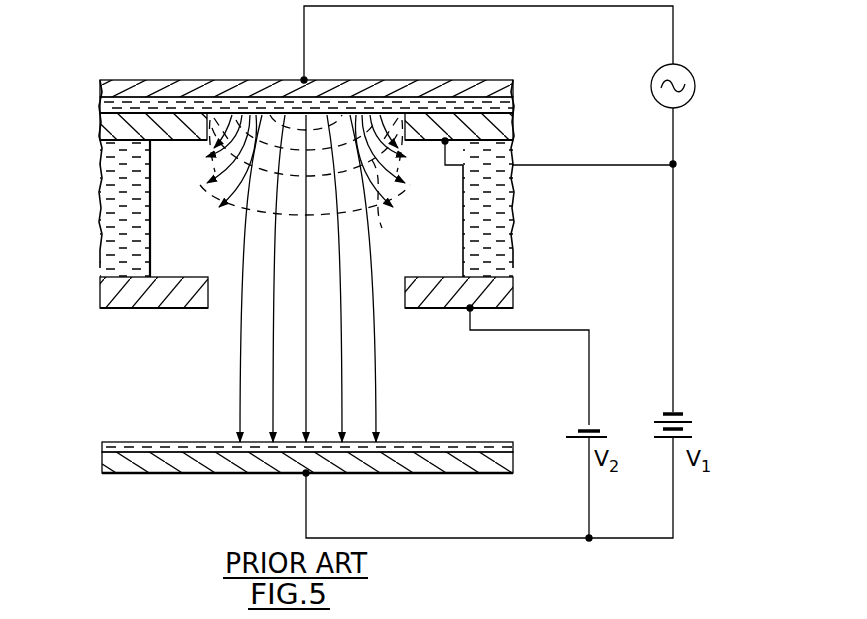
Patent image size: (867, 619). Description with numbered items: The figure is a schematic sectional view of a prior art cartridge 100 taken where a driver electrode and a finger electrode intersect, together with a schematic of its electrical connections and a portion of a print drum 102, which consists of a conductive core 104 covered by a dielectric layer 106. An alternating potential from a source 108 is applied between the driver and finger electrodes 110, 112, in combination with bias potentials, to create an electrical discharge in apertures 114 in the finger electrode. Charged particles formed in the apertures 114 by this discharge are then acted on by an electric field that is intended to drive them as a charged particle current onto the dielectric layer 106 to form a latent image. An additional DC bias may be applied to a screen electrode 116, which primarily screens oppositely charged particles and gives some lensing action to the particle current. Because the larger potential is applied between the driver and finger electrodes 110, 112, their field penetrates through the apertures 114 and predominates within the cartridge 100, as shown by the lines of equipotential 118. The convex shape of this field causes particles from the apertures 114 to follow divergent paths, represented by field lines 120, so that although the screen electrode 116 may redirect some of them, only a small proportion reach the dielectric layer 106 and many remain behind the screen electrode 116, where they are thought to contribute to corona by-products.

The prior art cartridge 100 is at (86, 175).
The print drum 102 is at (100, 461).
The conductive core 104 is at (180, 474).
The dielectric layer 106 is at (120, 443).
The source 108 is at (696, 81).
The driver electrode 110 is at (490, 80).
The finger electrode 112 is at (515, 118).
The apertures 114 is at (388, 118).
The screen electrode 116 is at (515, 287).
The lines of equipotential 118 is at (384, 226).
The field lines 120 is at (399, 197).